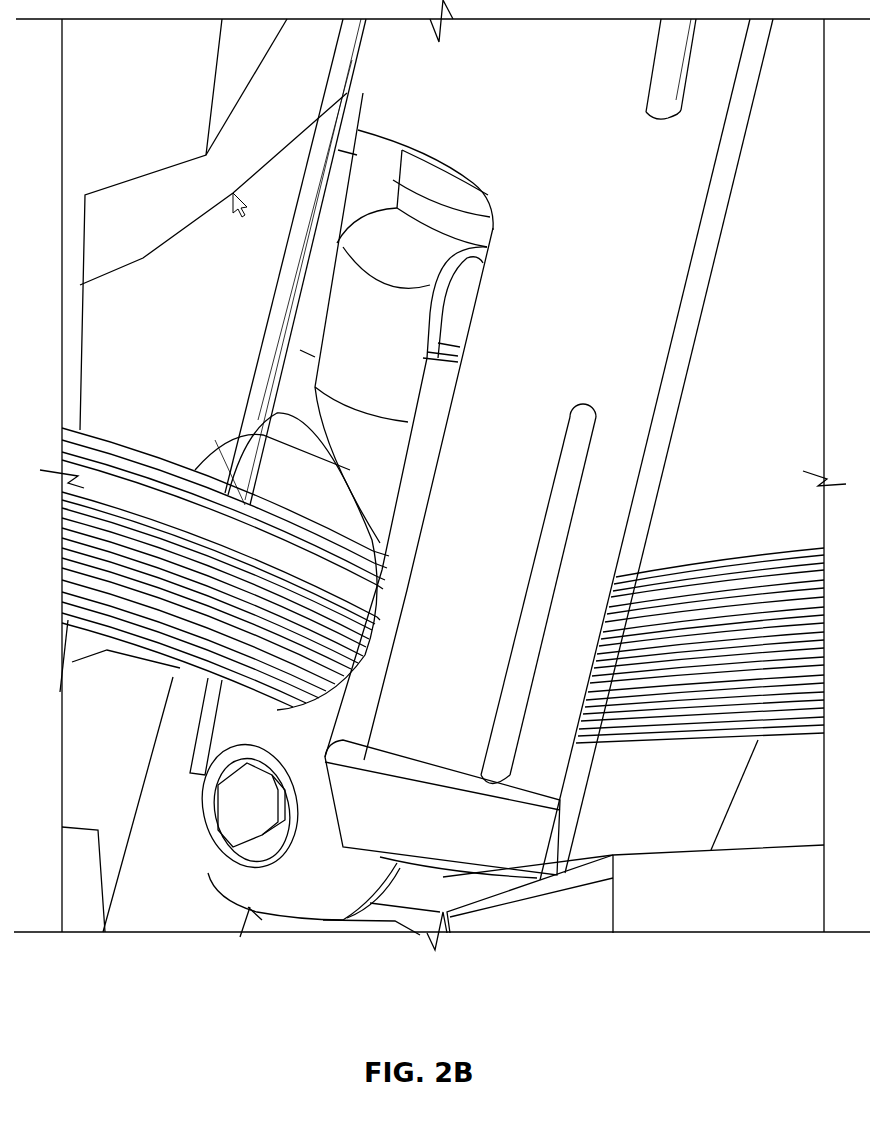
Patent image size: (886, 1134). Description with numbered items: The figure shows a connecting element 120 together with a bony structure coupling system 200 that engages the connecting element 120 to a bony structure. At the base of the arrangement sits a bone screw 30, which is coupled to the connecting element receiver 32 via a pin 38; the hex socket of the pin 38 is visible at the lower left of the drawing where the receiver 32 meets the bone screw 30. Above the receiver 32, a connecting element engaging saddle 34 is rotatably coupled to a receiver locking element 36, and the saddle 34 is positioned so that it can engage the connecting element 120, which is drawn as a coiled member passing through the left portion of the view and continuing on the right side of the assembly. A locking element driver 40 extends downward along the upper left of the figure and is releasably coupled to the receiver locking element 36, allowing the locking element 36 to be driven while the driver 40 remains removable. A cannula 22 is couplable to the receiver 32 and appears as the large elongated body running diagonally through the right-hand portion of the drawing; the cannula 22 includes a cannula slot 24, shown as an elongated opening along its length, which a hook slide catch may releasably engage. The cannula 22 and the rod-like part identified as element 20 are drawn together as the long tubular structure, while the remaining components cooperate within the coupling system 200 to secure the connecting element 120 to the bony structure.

The tube 20 is at (681, 342).
The cannula 22 is at (665, 258).
The cannula slot 24 is at (290, 402).
The bone screw 30 is at (262, 918).
The receiver 32 is at (210, 877).
The connecting element engaging saddle 34 is at (317, 487).
The receiver locking element 36 is at (310, 353).
The pin 38 is at (233, 812).
The locking element driver 40 is at (345, 275).
The connecting element 120 is at (720, 558).
The bony structure coupling system 200 is at (700, 900).